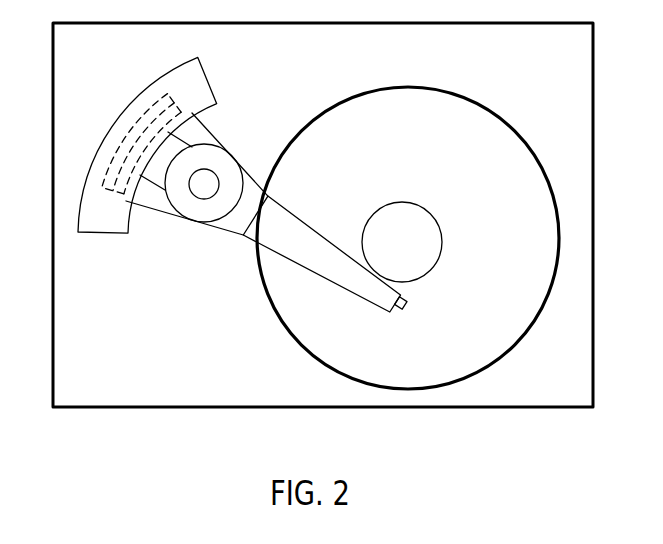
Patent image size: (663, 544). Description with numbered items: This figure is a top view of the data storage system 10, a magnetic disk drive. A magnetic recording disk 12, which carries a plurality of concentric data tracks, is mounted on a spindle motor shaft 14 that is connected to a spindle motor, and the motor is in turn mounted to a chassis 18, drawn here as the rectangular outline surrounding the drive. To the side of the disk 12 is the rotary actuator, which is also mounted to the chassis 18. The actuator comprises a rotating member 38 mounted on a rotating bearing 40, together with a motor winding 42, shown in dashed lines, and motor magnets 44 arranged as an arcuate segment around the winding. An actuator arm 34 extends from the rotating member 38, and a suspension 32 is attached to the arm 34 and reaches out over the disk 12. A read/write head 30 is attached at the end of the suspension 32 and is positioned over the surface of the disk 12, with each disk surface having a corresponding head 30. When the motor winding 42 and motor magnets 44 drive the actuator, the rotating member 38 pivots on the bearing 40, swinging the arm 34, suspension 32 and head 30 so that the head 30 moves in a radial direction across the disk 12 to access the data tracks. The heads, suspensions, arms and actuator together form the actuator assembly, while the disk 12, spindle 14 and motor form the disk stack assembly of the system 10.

The data storage system 10 is at (316, 254).
The magnetic recording disk 12 is at (348, 149).
The spindle motor shaft 14 is at (420, 240).
The chassis 18 is at (523, 76).
The read/write head 30 is at (405, 311).
The suspension 32 is at (303, 250).
The actuator arm 34 is at (248, 198).
The rotating member 38 is at (202, 210).
The rotating bearing 40 is at (195, 187).
The motor winding 42 is at (103, 190).
The motor magnets 44 is at (188, 83).